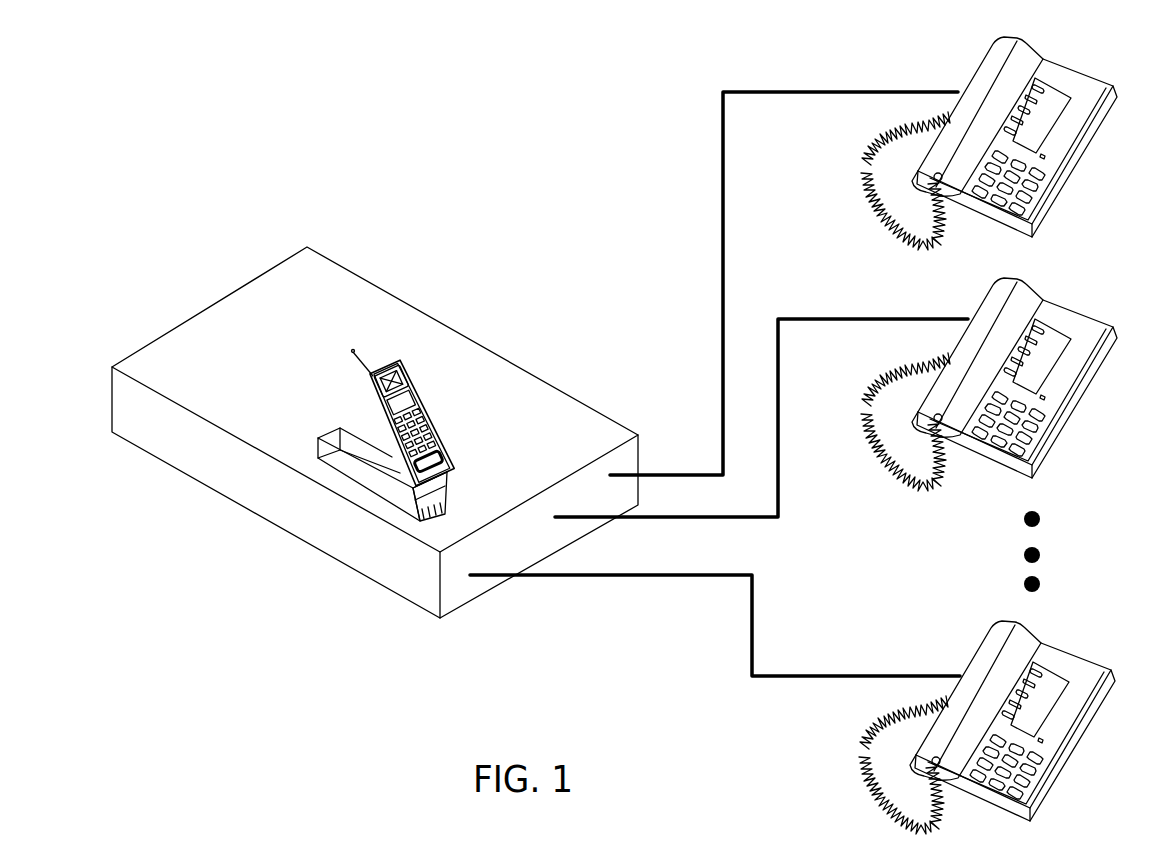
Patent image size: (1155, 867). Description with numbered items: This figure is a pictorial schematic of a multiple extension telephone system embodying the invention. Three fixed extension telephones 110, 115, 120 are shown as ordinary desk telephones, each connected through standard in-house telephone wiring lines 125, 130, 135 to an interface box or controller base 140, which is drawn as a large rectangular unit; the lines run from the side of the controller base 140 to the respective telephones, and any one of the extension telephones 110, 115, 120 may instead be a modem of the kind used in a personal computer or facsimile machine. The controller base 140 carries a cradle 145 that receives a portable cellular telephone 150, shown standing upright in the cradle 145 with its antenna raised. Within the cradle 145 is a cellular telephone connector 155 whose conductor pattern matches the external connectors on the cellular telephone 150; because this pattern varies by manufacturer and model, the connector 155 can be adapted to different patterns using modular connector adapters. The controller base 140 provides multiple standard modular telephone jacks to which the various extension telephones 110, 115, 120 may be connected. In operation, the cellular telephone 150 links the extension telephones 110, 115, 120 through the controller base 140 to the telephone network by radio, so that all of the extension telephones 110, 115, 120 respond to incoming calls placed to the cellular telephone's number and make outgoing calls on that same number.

The fixed extension telephone 110 is at (977, 92).
The fixed extension telephone 115 is at (990, 307).
The fixed extension telephone 120 is at (977, 650).
The in-house telephone wiring line 125 is at (817, 90).
The in-house telephone wiring line 130 is at (823, 315).
The in-house telephone wiring line 135 is at (820, 680).
The controller base 140 is at (582, 418).
The cradle 145 is at (333, 462).
The portable cellular telephone 150 is at (372, 390).
The cellular telephone connector 155 is at (420, 518).